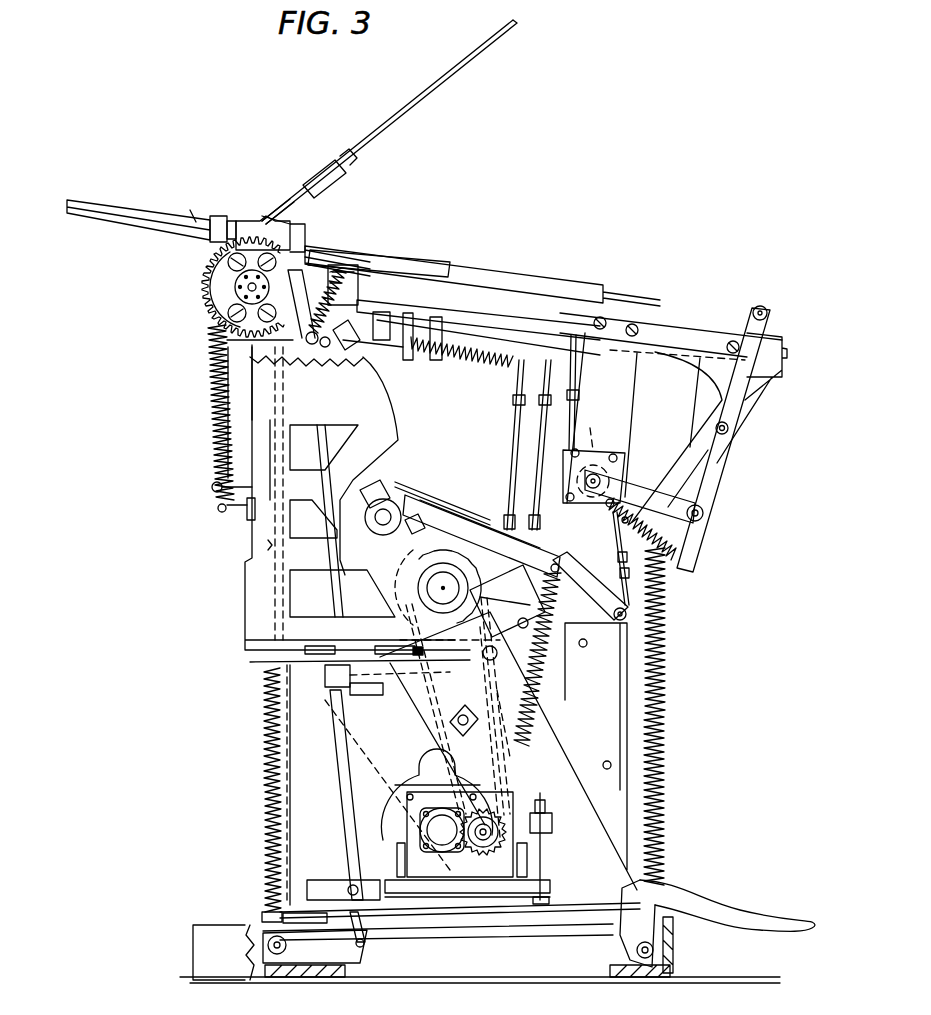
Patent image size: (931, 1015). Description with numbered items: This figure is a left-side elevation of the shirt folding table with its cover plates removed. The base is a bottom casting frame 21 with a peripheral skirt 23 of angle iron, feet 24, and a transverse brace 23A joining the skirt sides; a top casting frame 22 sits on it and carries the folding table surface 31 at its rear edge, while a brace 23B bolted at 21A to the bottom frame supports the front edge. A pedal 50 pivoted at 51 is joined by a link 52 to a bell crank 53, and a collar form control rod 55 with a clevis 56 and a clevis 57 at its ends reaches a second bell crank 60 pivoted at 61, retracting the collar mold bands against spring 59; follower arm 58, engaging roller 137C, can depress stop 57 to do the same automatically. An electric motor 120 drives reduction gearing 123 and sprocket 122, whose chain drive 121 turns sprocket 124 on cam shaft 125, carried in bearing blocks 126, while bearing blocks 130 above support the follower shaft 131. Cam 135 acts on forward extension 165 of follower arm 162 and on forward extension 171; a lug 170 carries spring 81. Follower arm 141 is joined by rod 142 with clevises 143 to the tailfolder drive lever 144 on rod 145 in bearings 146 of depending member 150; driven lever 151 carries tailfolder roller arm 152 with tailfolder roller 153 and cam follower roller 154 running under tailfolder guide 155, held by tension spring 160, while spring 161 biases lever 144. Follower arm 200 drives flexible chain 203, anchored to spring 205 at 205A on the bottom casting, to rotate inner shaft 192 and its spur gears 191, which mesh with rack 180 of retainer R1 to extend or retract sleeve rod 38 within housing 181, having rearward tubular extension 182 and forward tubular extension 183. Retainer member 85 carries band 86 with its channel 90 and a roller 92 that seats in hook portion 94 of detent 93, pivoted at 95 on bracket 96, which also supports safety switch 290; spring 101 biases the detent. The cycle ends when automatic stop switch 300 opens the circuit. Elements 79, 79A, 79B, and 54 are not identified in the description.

The band 86 is at (463, 63).
The channel 90 is at (322, 165).
The member 85 is at (292, 193).
The rearward tubular extension 182 is at (118, 208).
The retainer R1 is at (192, 218).
The housing 181 is at (243, 210).
The rack 180 is at (295, 229).
The spur gear 191 is at (213, 257).
The inner shaft 192 is at (247, 290).
The arm 79 is at (348, 298).
The supporting bracket 96 is at (338, 338).
The safety switch 290 is at (292, 272).
The detent member 93 is at (292, 288).
The pivot 95 is at (292, 303).
The hook portion 94 is at (292, 267).
The spring 81 is at (207, 368).
The arm portion 79A is at (247, 347).
The roller 92 is at (287, 347).
The clevis 57 is at (332, 697).
The second bell crank 60 is at (352, 347).
The pivot 61 is at (347, 357).
The spring 101 is at (330, 373).
The arm portion 79B is at (320, 387).
The forward tubular extension 183 is at (437, 253).
The sleeve rod 38 is at (507, 275).
The spring 59 is at (452, 357).
The folding table surface 31 is at (697, 313).
The forward extension 171 is at (452, 515).
The depending member 150 is at (627, 397).
The tailfolder guide 155 is at (698, 358).
The tailfolder driven lever 151 is at (635, 490).
The brace 23B is at (687, 447).
The bearing 146 is at (602, 431).
The tailfolder roller arm 152 is at (713, 460).
The tailfolder roller 153 is at (767, 313).
The cam follower roller 154 is at (728, 431).
The tailfolder tension spring 160 is at (665, 532).
The tailfolder drive lever 144 is at (643, 503).
The rod 145 is at (590, 483).
The clevis 143 is at (632, 560).
The spring 161 is at (668, 700).
The rod 142 is at (618, 560).
The follower arm 141 is at (597, 577).
The cam 135 is at (493, 568).
The sprocket 124 is at (463, 557).
The forward extension 165 is at (413, 513).
The bearing block 130 is at (367, 500).
The follower shaft 131 is at (383, 515).
The bearing block 126 is at (417, 553).
The cam shaft 125 is at (443, 590).
The roller 137C is at (417, 633).
The automatic stop switch 300 is at (553, 568).
The top casting frame 22 is at (248, 612).
The flexible chain 203 is at (278, 470).
The follower arm 200 is at (214, 485).
The lug 170 is at (219, 509).
The follower arm 162 is at (250, 512).
The bolted connection 21A is at (457, 737).
The follower arm 58 is at (357, 683).
The bottom casting frame 21 is at (306, 785).
The spring 205 is at (268, 777).
The collar form control rod 55 is at (352, 788).
The electric motor 120 is at (420, 783).
The reduction gearing 123 is at (442, 845).
The sprocket 122 is at (481, 848).
The chain drive 121 is at (433, 730).
The link 52 is at (500, 908).
The clevis 56 is at (367, 930).
The bell crank 53 is at (320, 947).
The roller 54 is at (277, 948).
The spring anchor 205A is at (267, 913).
The feet 24 is at (623, 980).
The peripheral skirt 23 is at (457, 963).
The transverse brace 23A is at (283, 977).
The pedal 50 is at (757, 920).
The pivot 51 is at (653, 950).